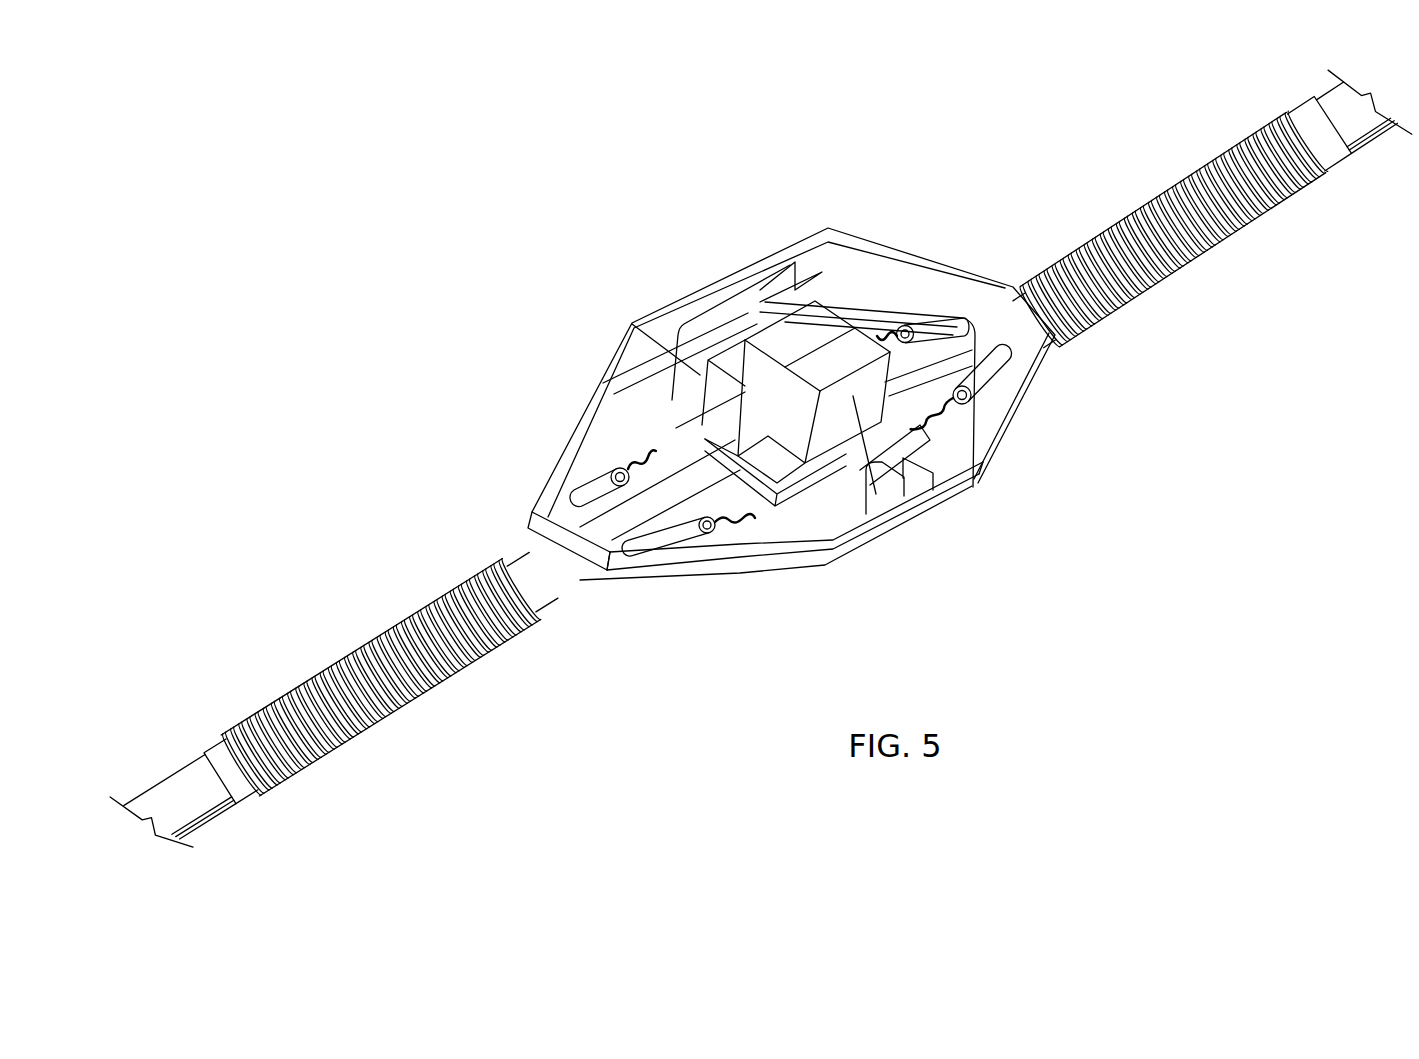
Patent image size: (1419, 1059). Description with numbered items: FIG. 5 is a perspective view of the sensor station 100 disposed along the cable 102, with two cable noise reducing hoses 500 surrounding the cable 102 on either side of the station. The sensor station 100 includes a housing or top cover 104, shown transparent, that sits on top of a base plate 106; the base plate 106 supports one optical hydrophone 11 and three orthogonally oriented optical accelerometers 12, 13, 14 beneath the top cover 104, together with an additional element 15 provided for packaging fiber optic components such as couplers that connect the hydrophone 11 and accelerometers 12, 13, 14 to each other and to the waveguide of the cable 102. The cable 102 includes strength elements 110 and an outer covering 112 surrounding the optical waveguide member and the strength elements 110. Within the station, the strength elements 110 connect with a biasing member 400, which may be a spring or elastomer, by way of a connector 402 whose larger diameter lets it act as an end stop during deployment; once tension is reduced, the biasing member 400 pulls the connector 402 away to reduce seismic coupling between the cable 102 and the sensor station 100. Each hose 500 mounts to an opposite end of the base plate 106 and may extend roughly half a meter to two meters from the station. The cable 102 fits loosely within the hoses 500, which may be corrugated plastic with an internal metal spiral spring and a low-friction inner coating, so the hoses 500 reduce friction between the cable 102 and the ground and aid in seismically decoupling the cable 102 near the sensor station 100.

The sensor station 100 is at (686, 212).
The cable 102 is at (1342, 120).
The top cover 104 is at (607, 372).
The base plate 106 is at (615, 580).
The strength elements 110 is at (925, 312).
The outer covering 112 is at (1320, 93).
The biasing member 400 is at (897, 336).
The connector 402 is at (906, 325).
The cable noise reducing hoses 500 is at (1140, 235).
The optical hydrophone 11 is at (745, 361).
The optical accelerometer 12 is at (713, 430).
The optical accelerometer 13 is at (809, 378).
The optical accelerometer 14 is at (817, 339).
The additional element 15 is at (907, 455).